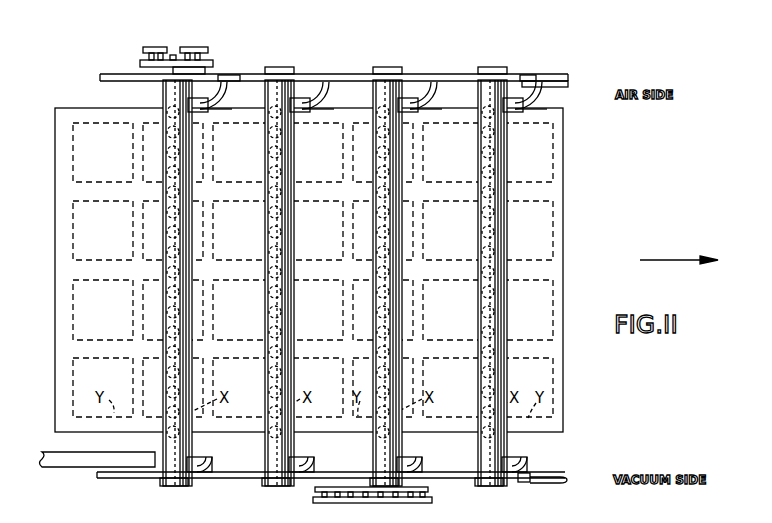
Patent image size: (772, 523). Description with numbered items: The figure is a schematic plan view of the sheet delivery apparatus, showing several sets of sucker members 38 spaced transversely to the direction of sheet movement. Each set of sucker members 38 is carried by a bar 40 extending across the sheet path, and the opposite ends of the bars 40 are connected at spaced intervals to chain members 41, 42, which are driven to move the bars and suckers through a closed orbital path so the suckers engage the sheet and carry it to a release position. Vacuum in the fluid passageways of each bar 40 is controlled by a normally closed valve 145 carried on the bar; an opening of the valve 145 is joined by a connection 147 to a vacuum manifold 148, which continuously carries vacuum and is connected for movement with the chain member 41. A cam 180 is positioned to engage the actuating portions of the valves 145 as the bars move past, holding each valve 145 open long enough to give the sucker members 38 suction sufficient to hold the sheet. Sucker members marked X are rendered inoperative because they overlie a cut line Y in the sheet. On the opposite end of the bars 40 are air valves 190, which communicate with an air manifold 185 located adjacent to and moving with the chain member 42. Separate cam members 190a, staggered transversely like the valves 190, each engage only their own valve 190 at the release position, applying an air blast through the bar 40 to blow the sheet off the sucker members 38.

The sucker members 38 is at (500, 322).
The bar 40 is at (217, 65).
The chain member 41 is at (405, 503).
The chain member 42 is at (165, 47).
The valve 145 is at (197, 458).
The connection 147 is at (521, 483).
The vacuum manifold 148 is at (562, 485).
The cam 180 is at (140, 462).
The air manifold 185 is at (443, 76).
The air valves 190 is at (188, 104).
The cam member 190a is at (228, 110).